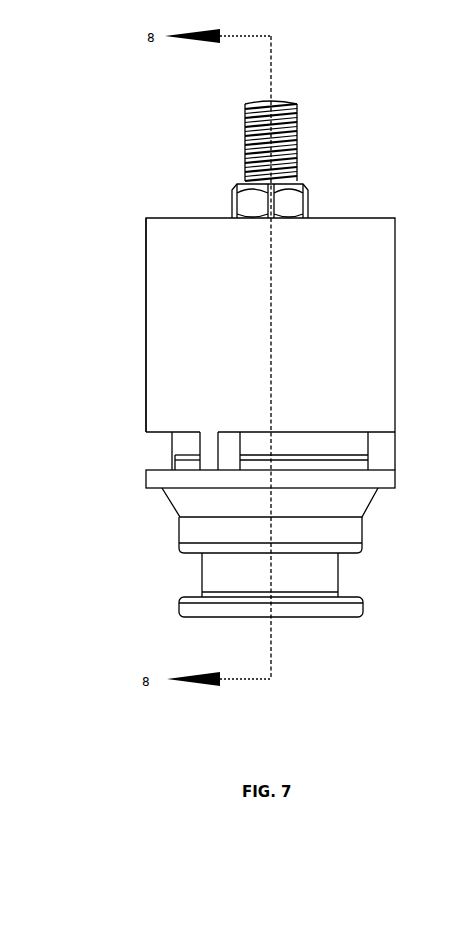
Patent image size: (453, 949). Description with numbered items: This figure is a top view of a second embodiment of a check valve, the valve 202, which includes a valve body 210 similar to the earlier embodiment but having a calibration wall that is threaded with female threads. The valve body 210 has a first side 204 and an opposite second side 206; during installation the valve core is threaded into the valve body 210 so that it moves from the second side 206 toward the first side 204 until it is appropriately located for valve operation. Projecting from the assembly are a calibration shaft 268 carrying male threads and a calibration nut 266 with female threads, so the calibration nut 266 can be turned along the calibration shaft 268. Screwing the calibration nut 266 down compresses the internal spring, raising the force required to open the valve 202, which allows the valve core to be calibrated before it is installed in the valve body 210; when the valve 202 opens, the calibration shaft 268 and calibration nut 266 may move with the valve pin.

The valve 202 is at (92, 229).
The first side of the valve body 204 is at (358, 533).
The second side of the valve body 206 is at (383, 238).
The valve body 210 is at (168, 333).
The calibration nut 266 is at (295, 197).
The calibration shaft 268 is at (297, 122).